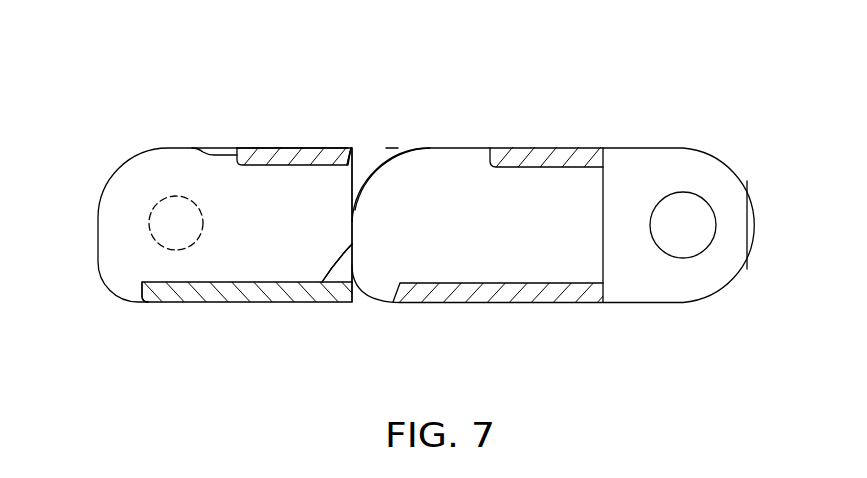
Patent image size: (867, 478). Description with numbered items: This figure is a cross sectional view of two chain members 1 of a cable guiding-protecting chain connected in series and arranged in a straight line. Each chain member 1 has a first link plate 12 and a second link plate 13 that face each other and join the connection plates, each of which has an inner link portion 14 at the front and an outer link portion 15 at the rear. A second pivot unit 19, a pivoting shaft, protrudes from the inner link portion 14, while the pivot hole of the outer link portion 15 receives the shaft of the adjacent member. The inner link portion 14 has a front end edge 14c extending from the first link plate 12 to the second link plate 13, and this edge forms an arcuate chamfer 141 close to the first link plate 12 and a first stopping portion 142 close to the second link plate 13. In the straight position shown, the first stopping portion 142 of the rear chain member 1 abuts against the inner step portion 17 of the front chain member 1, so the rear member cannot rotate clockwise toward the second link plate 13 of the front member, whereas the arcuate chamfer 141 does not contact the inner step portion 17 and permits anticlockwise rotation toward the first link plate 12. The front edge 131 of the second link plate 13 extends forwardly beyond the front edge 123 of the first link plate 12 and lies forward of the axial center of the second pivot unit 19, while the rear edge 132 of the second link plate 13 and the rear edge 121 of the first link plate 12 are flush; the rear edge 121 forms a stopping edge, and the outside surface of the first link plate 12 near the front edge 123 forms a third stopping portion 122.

The chain member 1 is at (130, 149).
The inner link portion 14 is at (134, 194).
The second pivot unit 19 is at (156, 222).
The outer link portion 15 is at (372, 162).
The front end edge 14c is at (392, 152).
The arcuate chamfer 141 is at (410, 152).
The inner step portion 17 is at (357, 168).
The first link plate 12 is at (270, 157).
The front edge 123 is at (200, 153).
The third stopping portion 122 is at (241, 150).
The rear edge 121 is at (345, 158).
The second link plate 13 is at (248, 290).
The front edge 131 is at (151, 290).
The first stopping portion 142 is at (322, 282).
The rear edge 132 is at (345, 290).